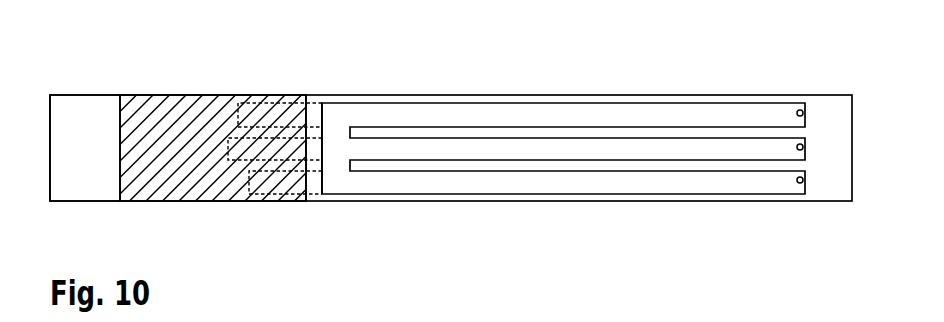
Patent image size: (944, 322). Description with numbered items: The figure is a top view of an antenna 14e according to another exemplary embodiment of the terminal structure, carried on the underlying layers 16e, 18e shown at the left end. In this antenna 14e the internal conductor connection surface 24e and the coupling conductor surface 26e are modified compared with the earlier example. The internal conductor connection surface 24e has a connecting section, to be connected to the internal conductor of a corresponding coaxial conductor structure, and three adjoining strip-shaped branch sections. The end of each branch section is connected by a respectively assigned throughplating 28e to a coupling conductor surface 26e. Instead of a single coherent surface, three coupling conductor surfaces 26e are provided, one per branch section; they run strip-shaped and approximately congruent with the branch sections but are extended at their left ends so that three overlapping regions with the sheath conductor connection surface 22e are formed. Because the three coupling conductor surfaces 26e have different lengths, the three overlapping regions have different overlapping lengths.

The antenna 14e is at (461, 63).
The carrier substrate 16e is at (100, 132).
The insulating layer 18e is at (100, 132).
The sheath conductor connection surface 22e is at (198, 115).
The internal conductor connection surface 24e is at (523, 152).
The coupling conductor surface 26e is at (313, 115).
The throughplating 28e is at (798, 145).